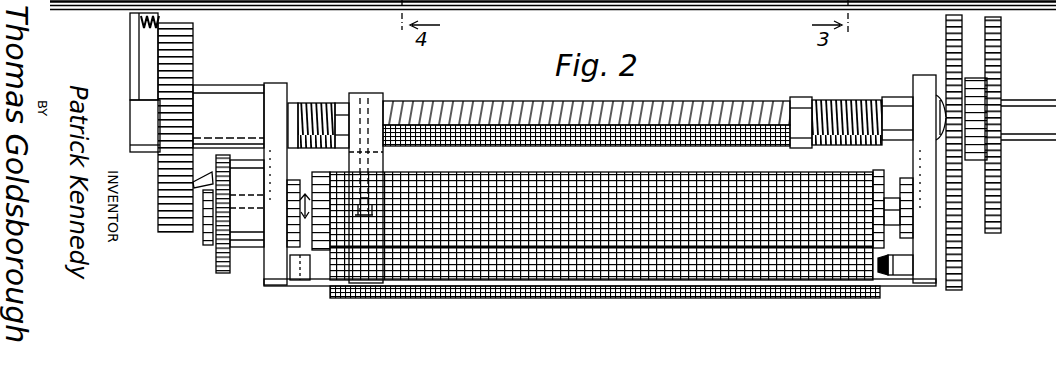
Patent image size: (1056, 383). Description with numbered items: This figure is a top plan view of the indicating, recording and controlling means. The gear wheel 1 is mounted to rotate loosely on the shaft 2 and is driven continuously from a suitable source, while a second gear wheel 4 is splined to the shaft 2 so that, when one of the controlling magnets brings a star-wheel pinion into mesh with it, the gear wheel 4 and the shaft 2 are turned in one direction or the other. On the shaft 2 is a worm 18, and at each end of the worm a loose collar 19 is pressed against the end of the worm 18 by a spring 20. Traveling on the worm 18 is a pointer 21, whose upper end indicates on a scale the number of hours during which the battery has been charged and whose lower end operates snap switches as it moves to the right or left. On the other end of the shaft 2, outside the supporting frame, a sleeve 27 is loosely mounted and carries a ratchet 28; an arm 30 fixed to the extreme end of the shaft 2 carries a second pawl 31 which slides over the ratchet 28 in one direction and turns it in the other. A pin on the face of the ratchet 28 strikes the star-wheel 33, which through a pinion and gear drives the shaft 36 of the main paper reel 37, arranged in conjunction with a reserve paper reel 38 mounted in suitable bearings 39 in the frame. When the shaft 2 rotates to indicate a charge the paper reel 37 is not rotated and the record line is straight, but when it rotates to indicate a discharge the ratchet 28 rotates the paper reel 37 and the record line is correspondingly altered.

The gear wheel 1 is at (962, 56).
The shaft 2 is at (893, 97).
The second gear wheel 4 is at (1001, 56).
The worm 18 is at (707, 110).
The loose collar 19 is at (350, 100).
The spring 20 is at (303, 104).
The pointer 21 is at (381, 170).
The sleeve 27 is at (220, 96).
The ratchet 28 is at (193, 62).
The arm 30 is at (131, 80).
The second pawl 31 is at (200, 178).
The star-wheel 33 is at (206, 238).
The shaft of the main paper reel 36 is at (305, 194).
The main paper reel 37 is at (672, 174).
The reserve paper reel 38 is at (525, 262).
The bearings 39 is at (298, 266).